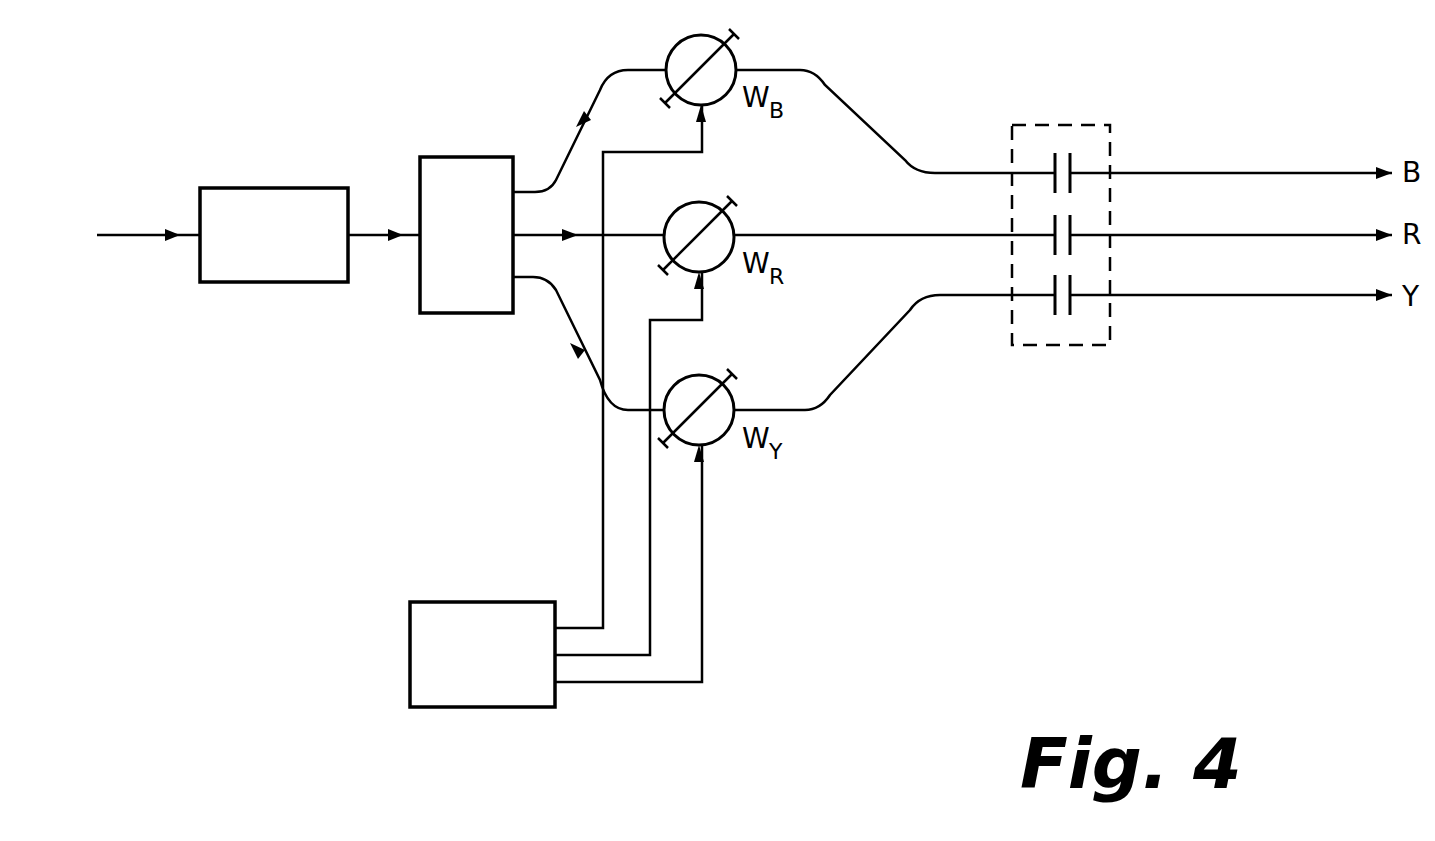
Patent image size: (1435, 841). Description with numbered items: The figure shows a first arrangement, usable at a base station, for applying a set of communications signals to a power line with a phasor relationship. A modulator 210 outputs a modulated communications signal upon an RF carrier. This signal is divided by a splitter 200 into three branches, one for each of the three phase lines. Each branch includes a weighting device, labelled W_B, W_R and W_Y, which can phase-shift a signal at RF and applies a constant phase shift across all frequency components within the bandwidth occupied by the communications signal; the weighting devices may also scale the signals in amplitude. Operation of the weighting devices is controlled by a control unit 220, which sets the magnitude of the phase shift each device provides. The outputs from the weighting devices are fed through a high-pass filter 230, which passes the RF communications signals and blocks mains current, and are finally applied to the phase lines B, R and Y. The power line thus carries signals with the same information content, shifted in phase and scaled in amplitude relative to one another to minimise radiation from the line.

The modulator 210 is at (240, 247).
The splitter 200 is at (438, 203).
The control unit 220 is at (516, 668).
The high-pass filter 230 is at (1028, 137).